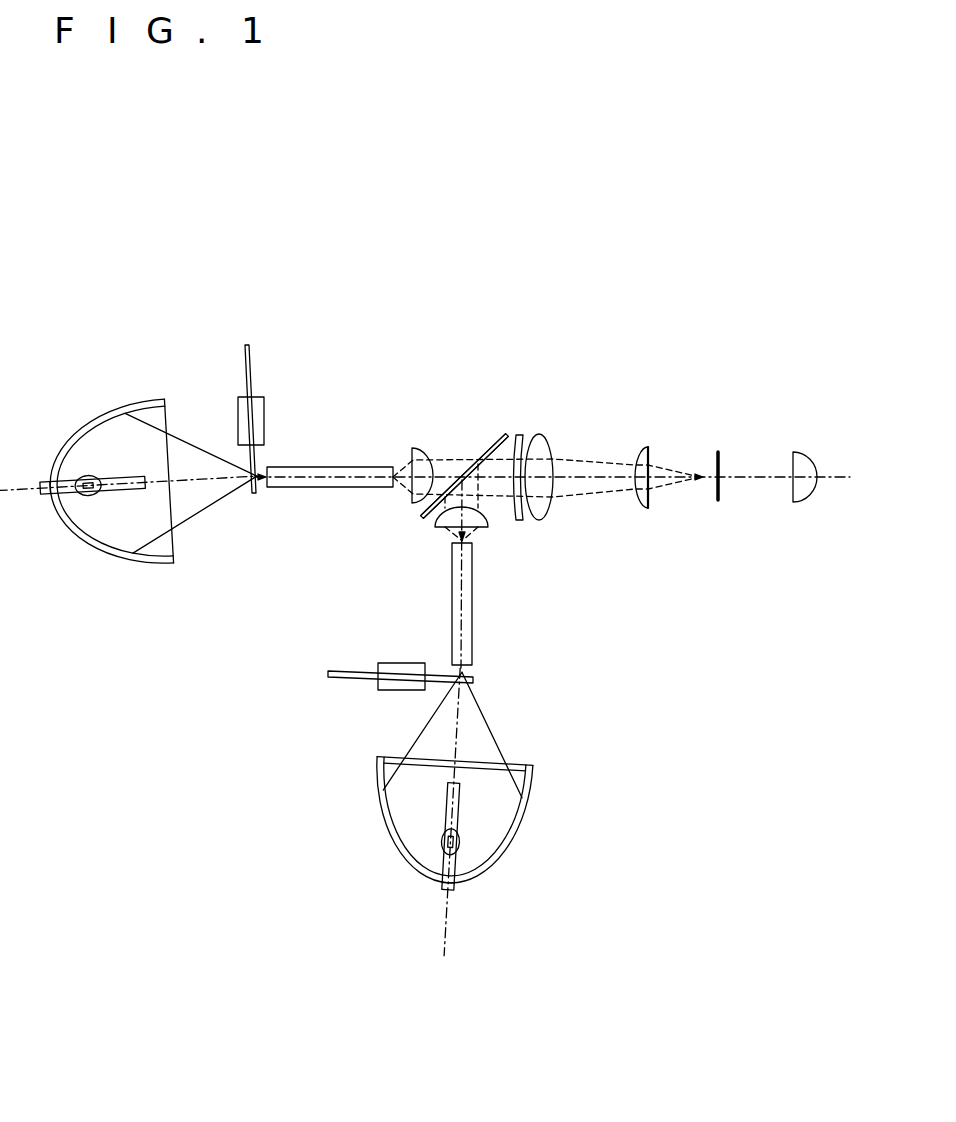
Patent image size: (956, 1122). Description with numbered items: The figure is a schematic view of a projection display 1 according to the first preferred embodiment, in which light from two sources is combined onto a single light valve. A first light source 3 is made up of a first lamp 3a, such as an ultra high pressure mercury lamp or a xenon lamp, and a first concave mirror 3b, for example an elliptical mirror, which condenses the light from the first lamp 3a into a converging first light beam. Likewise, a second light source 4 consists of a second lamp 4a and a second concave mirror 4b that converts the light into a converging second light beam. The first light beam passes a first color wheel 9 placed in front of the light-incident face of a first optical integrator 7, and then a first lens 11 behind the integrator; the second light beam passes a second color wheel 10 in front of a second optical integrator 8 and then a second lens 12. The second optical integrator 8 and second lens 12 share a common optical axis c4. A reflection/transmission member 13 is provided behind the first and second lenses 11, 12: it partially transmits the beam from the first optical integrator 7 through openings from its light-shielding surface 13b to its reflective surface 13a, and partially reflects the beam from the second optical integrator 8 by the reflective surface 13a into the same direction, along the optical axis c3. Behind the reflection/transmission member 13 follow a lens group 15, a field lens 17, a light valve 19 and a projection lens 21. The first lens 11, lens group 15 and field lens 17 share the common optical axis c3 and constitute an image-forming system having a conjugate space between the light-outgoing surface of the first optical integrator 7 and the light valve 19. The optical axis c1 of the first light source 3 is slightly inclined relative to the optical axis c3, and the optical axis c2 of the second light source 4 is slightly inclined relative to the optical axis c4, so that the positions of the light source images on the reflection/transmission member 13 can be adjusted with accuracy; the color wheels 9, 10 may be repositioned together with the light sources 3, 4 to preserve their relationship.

The projection display 1 is at (256, 232).
The first light source 3 is at (37, 593).
The first lamp 3a is at (87, 497).
The first concave mirror 3b is at (96, 421).
The second light source 4 is at (573, 757).
The second lamp 4a is at (443, 838).
The second concave mirror 4b is at (535, 778).
The first optical integrator 7 is at (330, 489).
The second optical integrator 8 is at (452, 583).
The first color wheel 9 is at (259, 384).
The second color wheel 10 is at (360, 685).
The first lens 11 is at (417, 446).
The second lens 12 is at (487, 528).
The reflection/transmission member 13 is at (470, 462).
The reflective surface 13a is at (433, 514).
The light-shielding surface 13b is at (492, 438).
The lens group 15 is at (510, 523).
The field lens 17 is at (645, 446).
The light valve 19 is at (718, 450).
The projection lens 21 is at (797, 450).
The optical axis of the first light source c1 is at (187, 480).
The optical axis of the second light source c2 is at (458, 733).
The common optical axis c3 is at (757, 476).
The common optical axis c4 is at (465, 602).